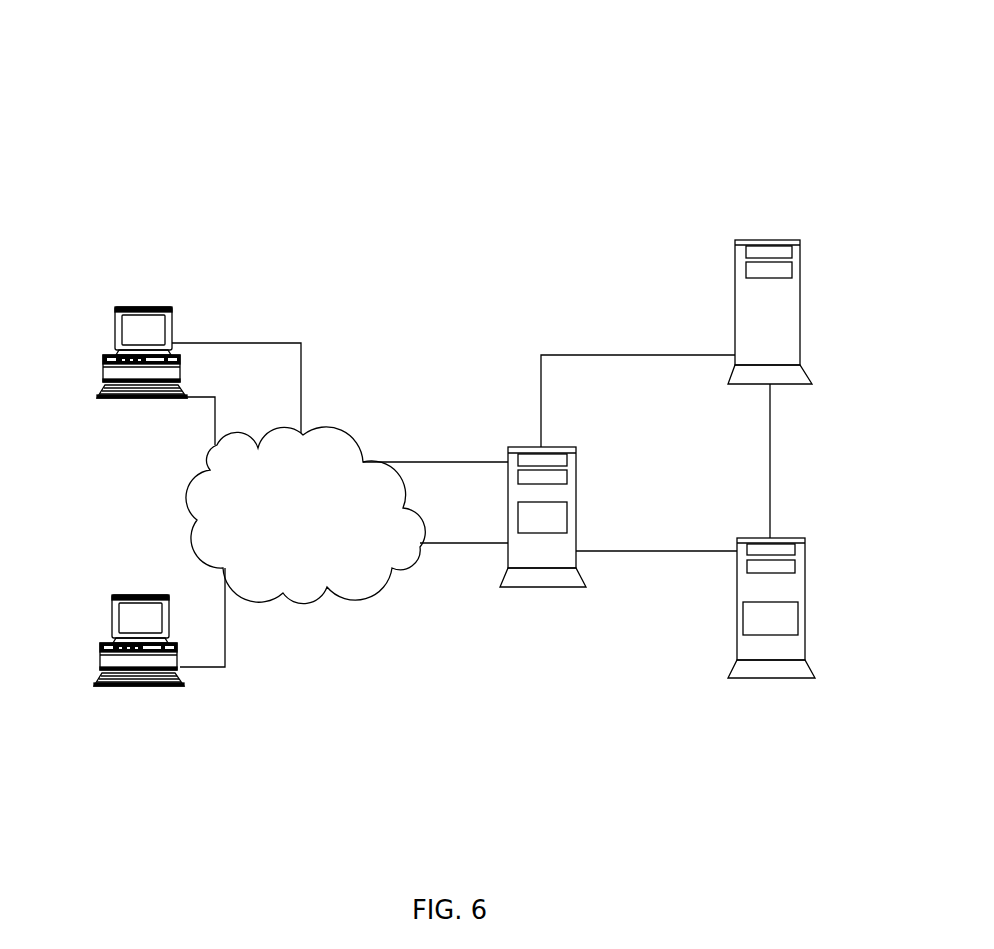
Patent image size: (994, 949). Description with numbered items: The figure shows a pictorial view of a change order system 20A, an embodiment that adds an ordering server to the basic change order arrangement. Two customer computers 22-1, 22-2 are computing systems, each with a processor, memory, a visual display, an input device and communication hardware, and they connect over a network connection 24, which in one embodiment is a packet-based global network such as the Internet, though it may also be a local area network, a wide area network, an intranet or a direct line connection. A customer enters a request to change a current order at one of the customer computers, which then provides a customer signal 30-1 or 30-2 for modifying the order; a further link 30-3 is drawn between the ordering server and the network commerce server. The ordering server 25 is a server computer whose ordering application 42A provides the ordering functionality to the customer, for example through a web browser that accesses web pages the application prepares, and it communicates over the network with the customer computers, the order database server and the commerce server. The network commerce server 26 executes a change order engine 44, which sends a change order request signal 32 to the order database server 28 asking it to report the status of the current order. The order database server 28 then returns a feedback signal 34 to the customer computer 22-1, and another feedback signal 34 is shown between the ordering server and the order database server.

The change order system 20A is at (451, 74).
The customer computer 22-1 is at (142, 318).
The customer computer 22-2 is at (150, 682).
The network connection 24 is at (315, 490).
The ordering server 25 is at (541, 557).
The network commerce server 26 is at (776, 659).
The order database server 28 is at (759, 277).
The customer signal 30-1 is at (215, 438).
The customer signal 30-2 is at (225, 658).
The network link 30-3 is at (693, 551).
The change order request signal 32 is at (770, 483).
The feedback signal 34 is at (301, 370).
The ordering application 42A is at (568, 520).
The change order engine 44 is at (798, 618).